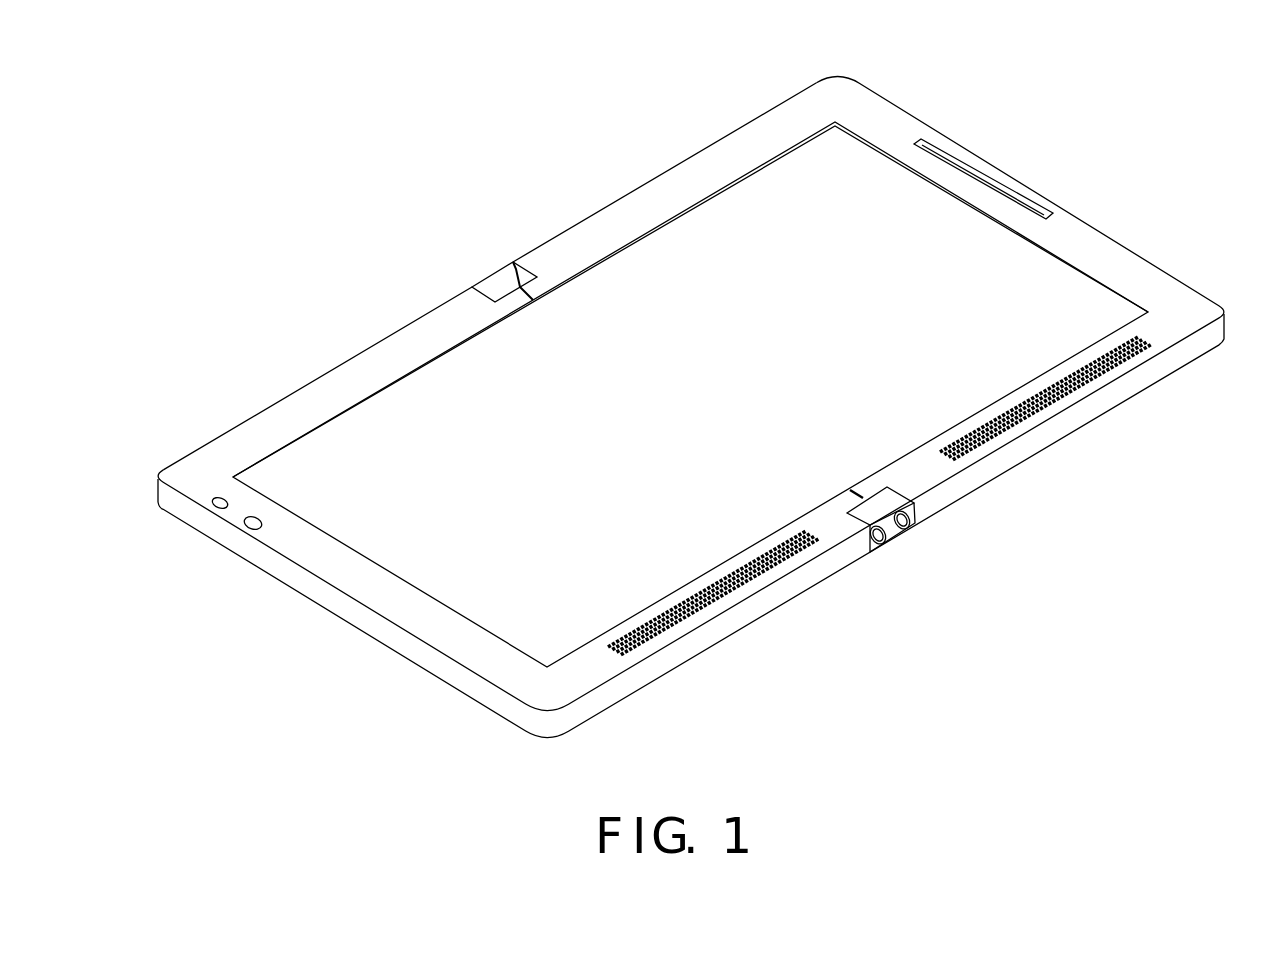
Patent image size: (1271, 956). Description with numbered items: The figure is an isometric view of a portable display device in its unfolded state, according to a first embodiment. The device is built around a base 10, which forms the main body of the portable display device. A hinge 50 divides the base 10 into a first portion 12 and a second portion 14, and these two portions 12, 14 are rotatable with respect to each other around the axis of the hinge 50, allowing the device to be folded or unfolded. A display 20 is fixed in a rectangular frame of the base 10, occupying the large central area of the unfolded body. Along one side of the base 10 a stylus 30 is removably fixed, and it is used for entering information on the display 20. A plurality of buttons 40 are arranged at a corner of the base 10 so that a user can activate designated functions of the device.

The base 10 is at (396, 244).
The first portion 12 is at (425, 340).
The second portion 14 is at (565, 248).
The display 20 is at (370, 447).
The stylus 30 is at (953, 167).
The buttons 40 is at (218, 497).
The hinge 50 is at (893, 527).